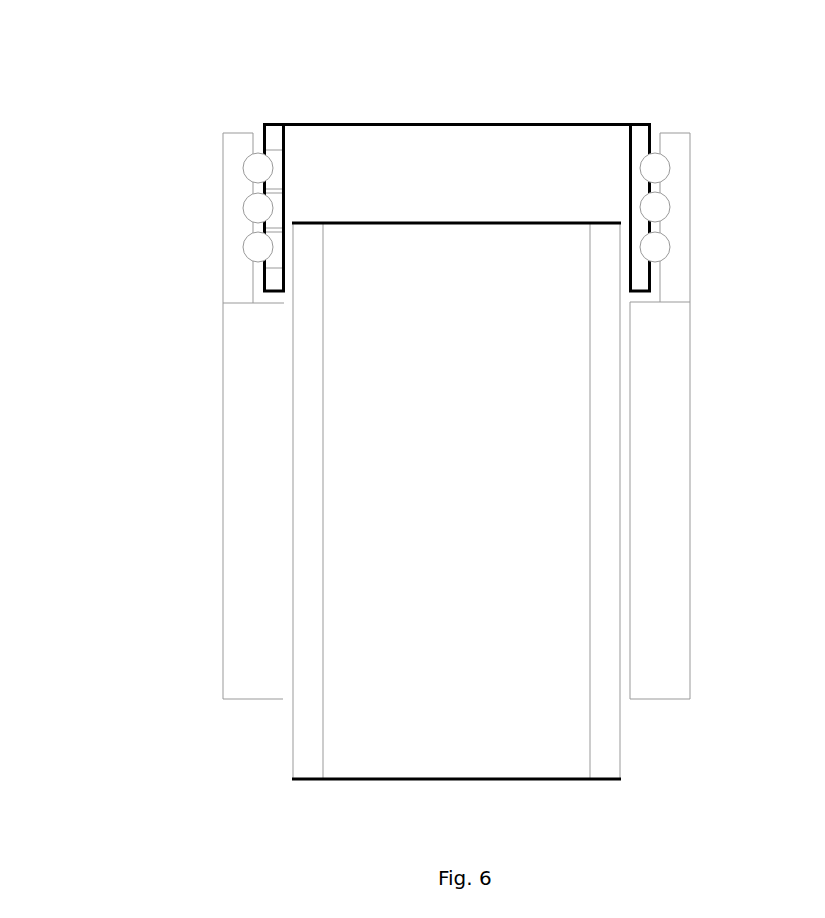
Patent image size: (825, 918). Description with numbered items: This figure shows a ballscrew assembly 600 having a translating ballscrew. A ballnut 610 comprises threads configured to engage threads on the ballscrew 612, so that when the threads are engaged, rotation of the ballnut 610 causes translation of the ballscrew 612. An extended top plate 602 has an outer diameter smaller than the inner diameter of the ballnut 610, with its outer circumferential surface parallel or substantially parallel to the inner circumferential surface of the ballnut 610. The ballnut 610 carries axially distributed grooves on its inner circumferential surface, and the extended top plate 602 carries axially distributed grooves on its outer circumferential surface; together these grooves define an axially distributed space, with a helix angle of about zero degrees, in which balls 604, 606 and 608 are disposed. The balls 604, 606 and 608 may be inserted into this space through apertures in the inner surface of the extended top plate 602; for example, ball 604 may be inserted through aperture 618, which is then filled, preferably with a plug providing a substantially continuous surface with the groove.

The ballscrew assembly 600 is at (150, 113).
The extended top plate 602 is at (595, 122).
The ball 604 is at (660, 170).
The ball 606 is at (658, 207).
The ball 608 is at (652, 252).
The ballnut 610 is at (675, 363).
The ballscrew 612 is at (605, 453).
The aperture 618 is at (280, 170).